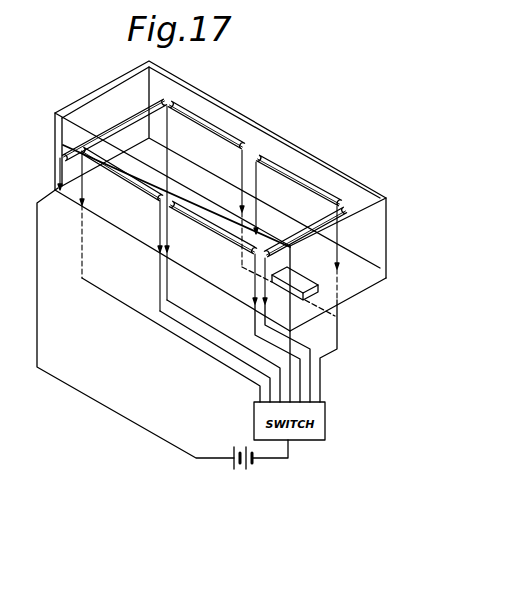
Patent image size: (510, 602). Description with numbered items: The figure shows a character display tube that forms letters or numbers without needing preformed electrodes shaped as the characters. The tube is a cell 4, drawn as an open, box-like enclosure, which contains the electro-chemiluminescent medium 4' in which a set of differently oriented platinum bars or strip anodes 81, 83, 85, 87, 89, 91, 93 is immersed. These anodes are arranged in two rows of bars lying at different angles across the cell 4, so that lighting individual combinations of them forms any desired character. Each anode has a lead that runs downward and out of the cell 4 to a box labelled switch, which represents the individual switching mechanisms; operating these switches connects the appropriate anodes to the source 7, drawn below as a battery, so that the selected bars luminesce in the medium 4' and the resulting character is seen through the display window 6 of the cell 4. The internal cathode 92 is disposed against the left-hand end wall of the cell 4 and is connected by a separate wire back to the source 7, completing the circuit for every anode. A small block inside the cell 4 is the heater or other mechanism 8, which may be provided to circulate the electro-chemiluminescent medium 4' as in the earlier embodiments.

The cell 4 is at (227, 260).
The electro-chemiluminescent medium 4' is at (375, 238).
The display window 6 is at (258, 133).
The source 7 is at (238, 469).
The heater or other mechanism 8 is at (307, 291).
The strip anode 81 is at (161, 101).
The strip anode 83 is at (213, 125).
The strip anode 85 is at (264, 158).
The strip anode 87 is at (282, 171).
The strip anode 89 is at (346, 209).
The strip anode 91 is at (223, 233).
The internal cathode 92 is at (72, 140).
The strip anode 93 is at (138, 189).